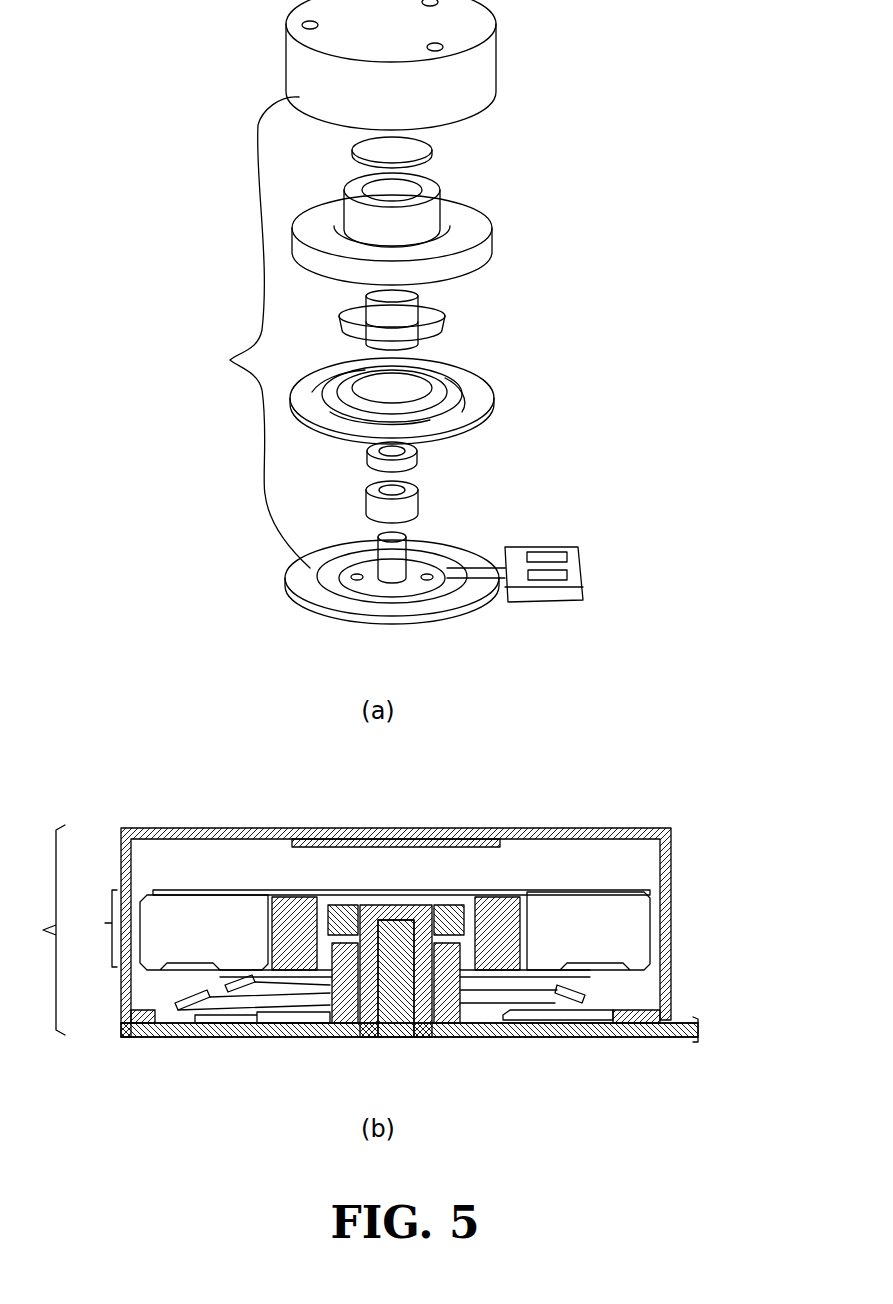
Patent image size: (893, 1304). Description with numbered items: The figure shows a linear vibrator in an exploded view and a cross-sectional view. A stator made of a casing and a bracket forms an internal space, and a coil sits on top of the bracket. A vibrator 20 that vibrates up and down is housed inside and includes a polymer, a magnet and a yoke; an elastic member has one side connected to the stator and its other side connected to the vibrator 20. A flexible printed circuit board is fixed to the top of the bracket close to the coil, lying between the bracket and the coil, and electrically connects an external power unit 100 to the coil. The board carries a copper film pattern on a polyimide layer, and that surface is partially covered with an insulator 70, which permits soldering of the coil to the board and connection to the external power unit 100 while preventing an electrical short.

The vibrator 20 is at (96, 928).
The insulator 70 is at (402, 587).
The external power unit 100 is at (560, 577).